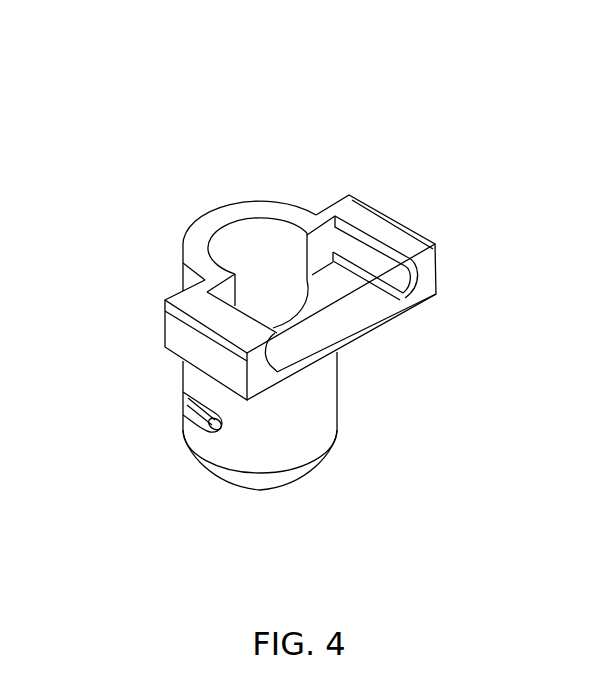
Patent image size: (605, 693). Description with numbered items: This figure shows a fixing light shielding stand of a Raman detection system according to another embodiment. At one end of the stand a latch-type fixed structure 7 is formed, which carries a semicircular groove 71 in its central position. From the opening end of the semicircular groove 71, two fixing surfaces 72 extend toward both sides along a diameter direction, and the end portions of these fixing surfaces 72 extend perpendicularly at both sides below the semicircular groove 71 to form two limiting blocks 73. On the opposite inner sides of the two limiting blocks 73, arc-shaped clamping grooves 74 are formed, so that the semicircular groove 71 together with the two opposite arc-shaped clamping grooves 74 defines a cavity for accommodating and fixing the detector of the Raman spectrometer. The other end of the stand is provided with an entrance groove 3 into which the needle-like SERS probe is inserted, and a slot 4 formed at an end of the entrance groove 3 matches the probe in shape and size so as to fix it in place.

The latch-type fixed structure 7 is at (200, 193).
The semicircular groove 71 is at (250, 240).
The fixing surfaces 72 is at (326, 212).
The limiting blocks 73 is at (405, 237).
The arc-shaped clamping grooves 74 is at (433, 290).
The entrance groove 3 is at (183, 402).
The slot 4 is at (207, 433).